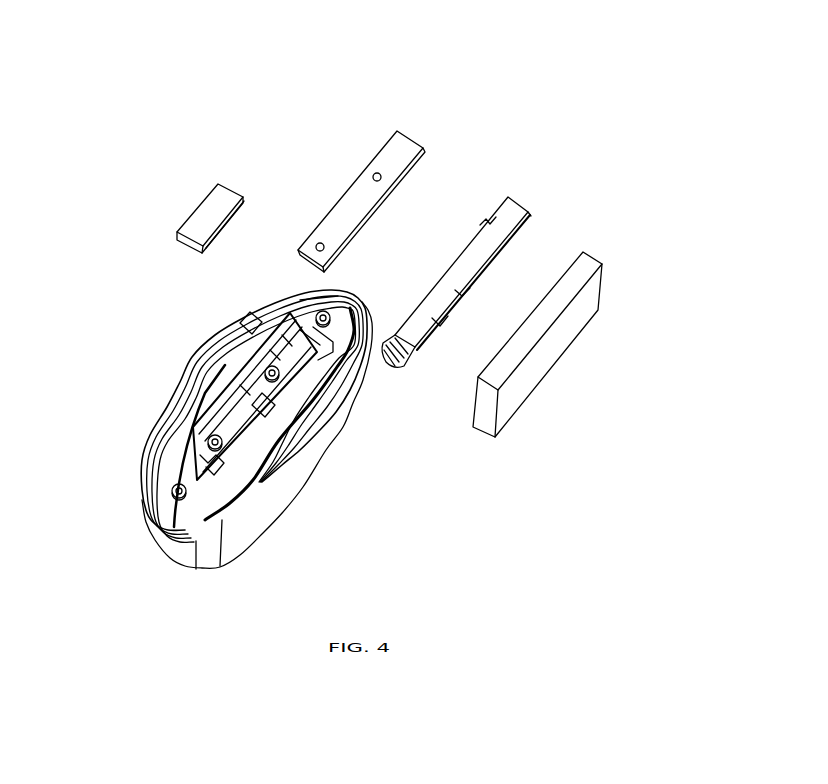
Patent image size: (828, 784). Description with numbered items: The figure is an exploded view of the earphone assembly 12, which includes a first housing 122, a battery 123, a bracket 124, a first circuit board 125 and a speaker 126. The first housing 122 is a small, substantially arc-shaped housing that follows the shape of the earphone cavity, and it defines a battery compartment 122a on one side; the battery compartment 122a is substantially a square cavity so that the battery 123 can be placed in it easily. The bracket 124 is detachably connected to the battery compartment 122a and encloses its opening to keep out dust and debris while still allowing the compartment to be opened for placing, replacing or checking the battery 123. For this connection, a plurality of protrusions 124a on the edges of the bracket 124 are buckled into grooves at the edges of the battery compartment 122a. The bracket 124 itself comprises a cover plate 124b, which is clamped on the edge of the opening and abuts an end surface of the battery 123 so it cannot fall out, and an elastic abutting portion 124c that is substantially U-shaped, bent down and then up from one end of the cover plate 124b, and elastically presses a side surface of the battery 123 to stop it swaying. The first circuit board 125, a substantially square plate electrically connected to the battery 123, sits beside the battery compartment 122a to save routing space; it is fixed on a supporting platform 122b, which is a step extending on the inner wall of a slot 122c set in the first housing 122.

The earphone assembly 12 is at (480, 92).
The first housing 122 is at (202, 397).
The battery compartment 122a is at (283, 407).
The supporting platform 122b is at (202, 418).
The slot 122c is at (240, 323).
The battery 123 is at (570, 323).
The bracket 124 is at (485, 242).
The protrusions 124a is at (415, 303).
The cover plate 124b is at (467, 278).
The elastic abutting portion 124c is at (407, 353).
The first circuit board 125 is at (358, 198).
The speaker 126 is at (205, 223).